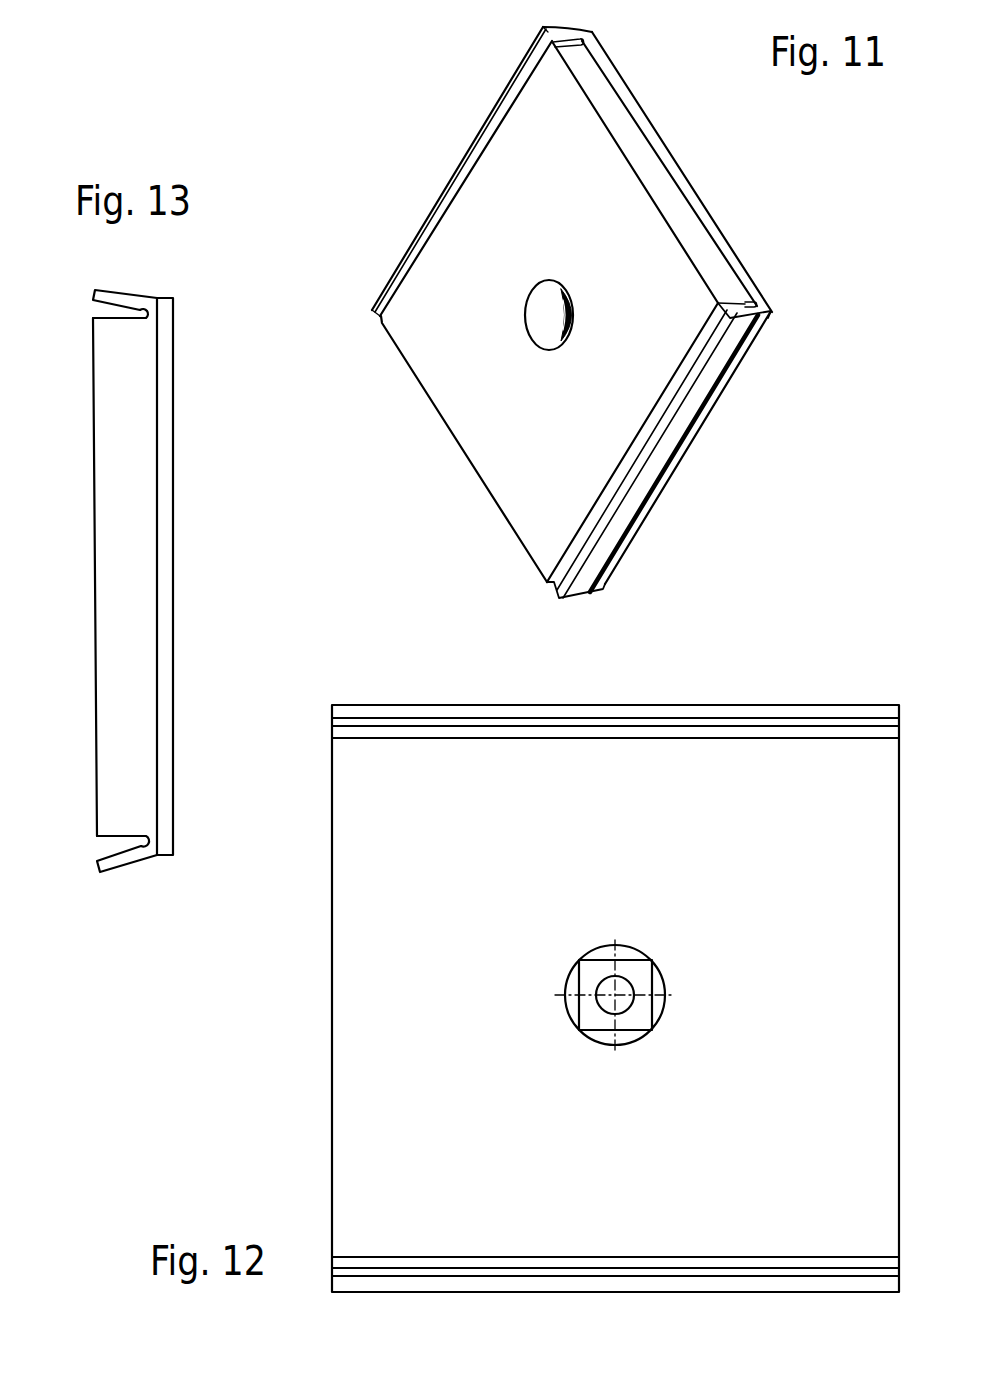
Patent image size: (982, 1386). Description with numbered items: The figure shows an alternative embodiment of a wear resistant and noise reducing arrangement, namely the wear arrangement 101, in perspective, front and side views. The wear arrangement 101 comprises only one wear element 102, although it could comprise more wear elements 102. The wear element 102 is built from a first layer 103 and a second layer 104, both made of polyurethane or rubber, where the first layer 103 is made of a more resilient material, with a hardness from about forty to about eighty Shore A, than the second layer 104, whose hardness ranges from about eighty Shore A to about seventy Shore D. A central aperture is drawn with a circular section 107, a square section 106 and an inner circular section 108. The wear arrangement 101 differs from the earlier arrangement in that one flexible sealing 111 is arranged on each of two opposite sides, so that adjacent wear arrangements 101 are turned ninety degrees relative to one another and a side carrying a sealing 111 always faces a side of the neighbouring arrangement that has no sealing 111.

In FIG. 11, the wear arrangement 101 is at (762, 378).
In FIG. 13, the wear arrangement 101 is at (195, 548).
In FIG. 12, the wear arrangement 101 is at (739, 677).
In FIG. 11, the wear element 102 is at (492, 456).
In FIG. 12, the wear element 102 is at (386, 1104).
In FIG. 11, the first layer 103 is at (671, 187).
In FIG. 13, the first layer 103 is at (116, 627).
In FIG. 11, the second layer 104 is at (731, 252).
In FIG. 13, the second layer 104 is at (166, 432).
In FIG. 12, the square recess 106 is at (577, 1001).
In FIG. 12, the circular boss 107 is at (638, 968).
In FIG. 12, the central hole 108 is at (622, 1003).
In FIG. 11, the flexible sealing 111 is at (258, 267).
In FIG. 13, the flexible sealing 111 is at (121, 298).
In FIG. 12, the flexible sealing 111 is at (401, 706).